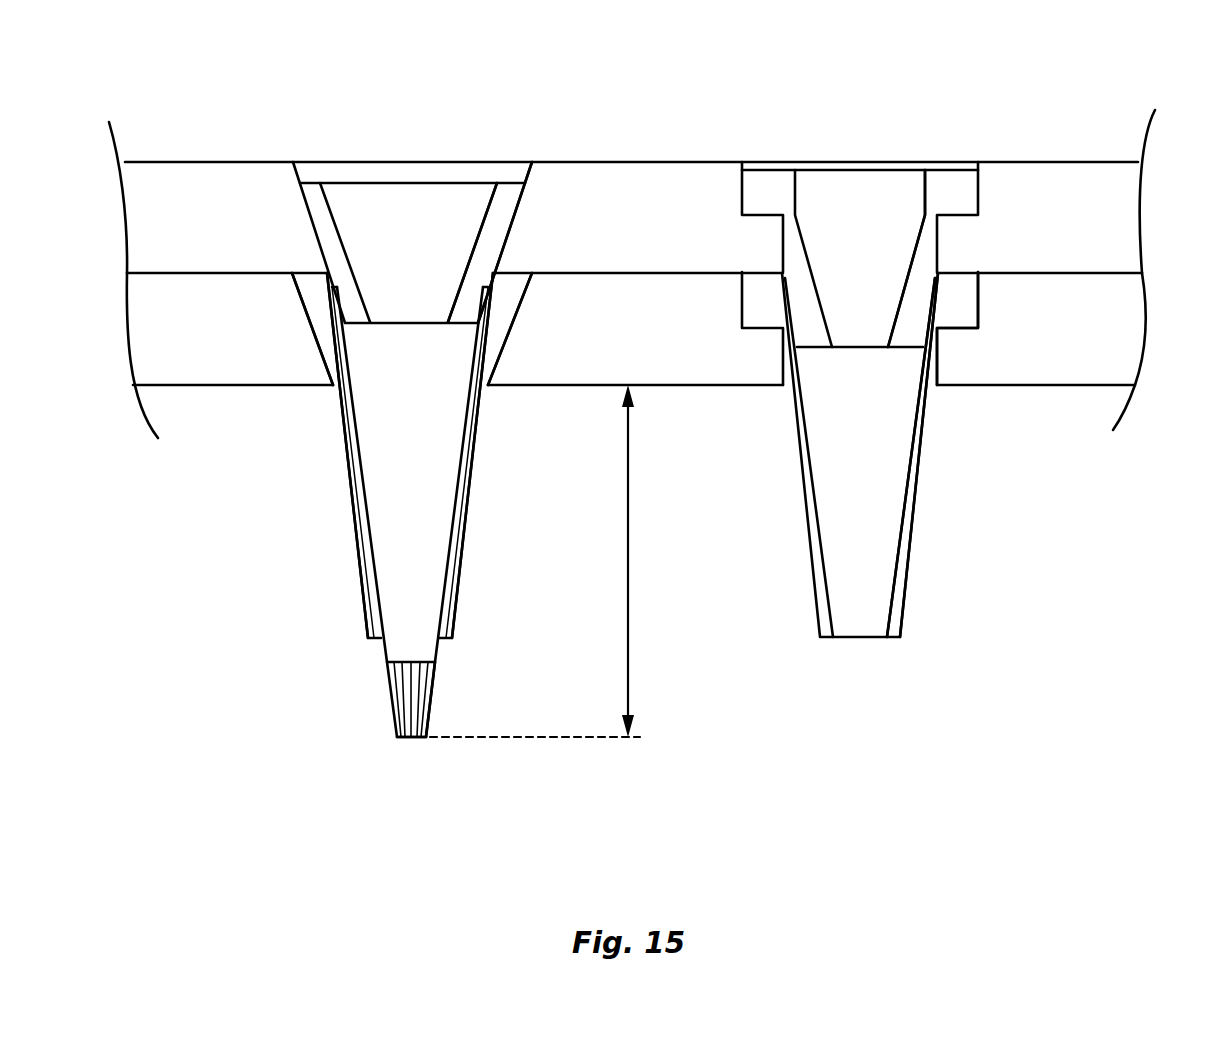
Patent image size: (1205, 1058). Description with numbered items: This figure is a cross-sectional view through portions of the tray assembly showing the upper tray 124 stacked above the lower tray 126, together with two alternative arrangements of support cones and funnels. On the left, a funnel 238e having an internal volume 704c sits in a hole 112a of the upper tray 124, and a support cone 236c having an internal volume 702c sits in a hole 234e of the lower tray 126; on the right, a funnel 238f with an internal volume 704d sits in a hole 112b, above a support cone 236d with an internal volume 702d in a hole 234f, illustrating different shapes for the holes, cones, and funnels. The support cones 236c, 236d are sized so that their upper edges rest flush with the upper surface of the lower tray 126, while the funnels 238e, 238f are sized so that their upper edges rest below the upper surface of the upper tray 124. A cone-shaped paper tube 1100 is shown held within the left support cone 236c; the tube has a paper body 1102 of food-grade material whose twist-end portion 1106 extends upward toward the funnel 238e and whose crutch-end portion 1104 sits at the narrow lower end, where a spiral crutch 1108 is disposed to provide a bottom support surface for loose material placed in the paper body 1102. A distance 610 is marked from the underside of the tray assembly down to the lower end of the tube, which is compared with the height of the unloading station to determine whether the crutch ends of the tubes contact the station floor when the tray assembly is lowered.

The upper tray 124 is at (192, 125).
The lower tray 126 is at (219, 415).
The internal volume 704c is at (398, 213).
The internal volume 704d is at (874, 201).
The funnel 238e is at (488, 215).
The funnel 238f is at (923, 240).
The twist-end portion 1106 is at (305, 311).
The hole 112a is at (508, 227).
The hole 112b is at (938, 253).
The hole 234e is at (507, 338).
The hole 234f is at (938, 365).
The internal volume 702c is at (335, 472).
The internal volume 702d is at (852, 508).
The paper tube 1100 is at (454, 443).
The support cone 236c is at (467, 543).
The support cone 236d is at (925, 558).
The crutch 1108 is at (408, 716).
The crutch-end portion 1104 is at (338, 703).
The paper body 1102 is at (440, 647).
The distance 610 is at (630, 600).